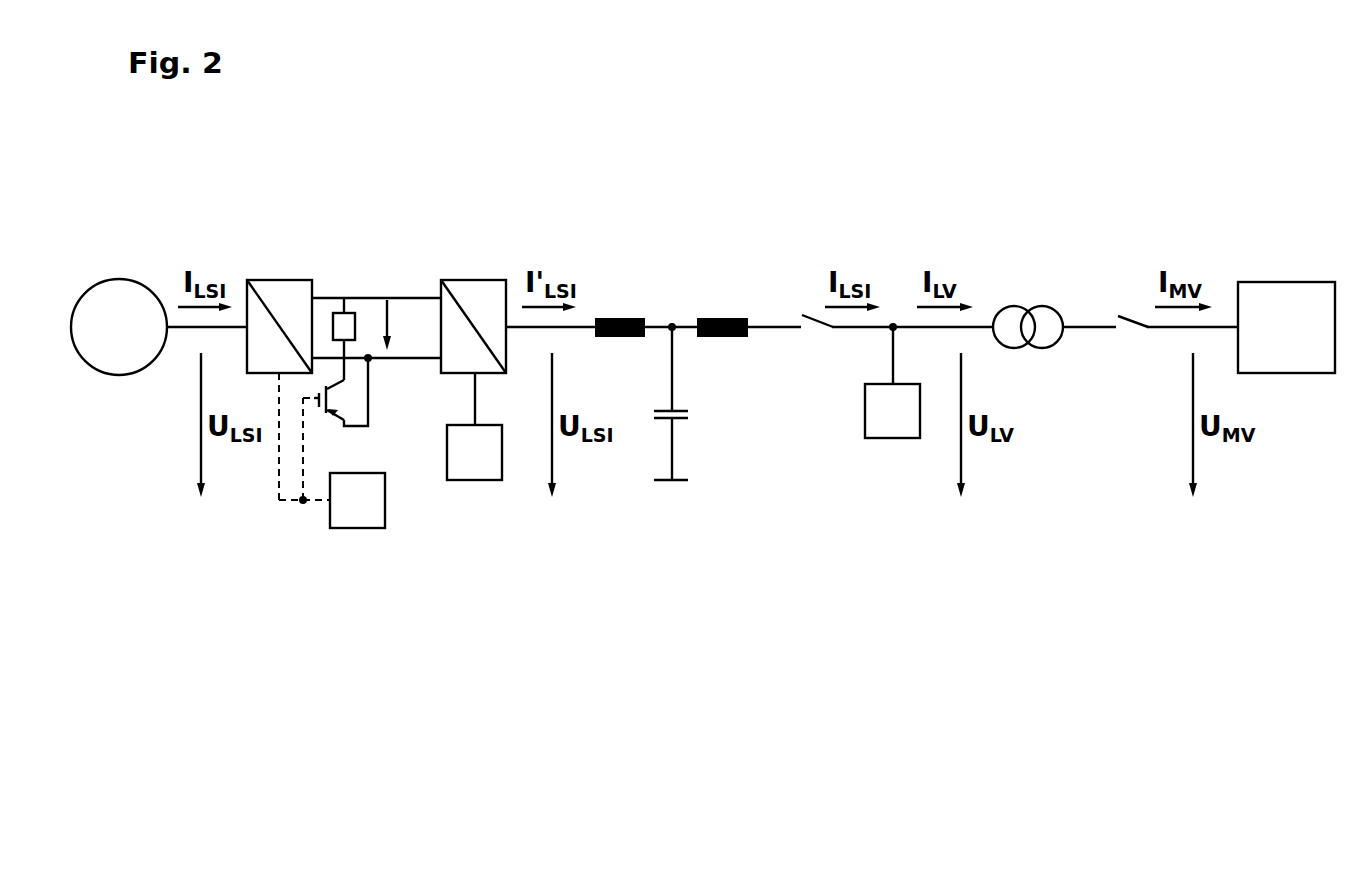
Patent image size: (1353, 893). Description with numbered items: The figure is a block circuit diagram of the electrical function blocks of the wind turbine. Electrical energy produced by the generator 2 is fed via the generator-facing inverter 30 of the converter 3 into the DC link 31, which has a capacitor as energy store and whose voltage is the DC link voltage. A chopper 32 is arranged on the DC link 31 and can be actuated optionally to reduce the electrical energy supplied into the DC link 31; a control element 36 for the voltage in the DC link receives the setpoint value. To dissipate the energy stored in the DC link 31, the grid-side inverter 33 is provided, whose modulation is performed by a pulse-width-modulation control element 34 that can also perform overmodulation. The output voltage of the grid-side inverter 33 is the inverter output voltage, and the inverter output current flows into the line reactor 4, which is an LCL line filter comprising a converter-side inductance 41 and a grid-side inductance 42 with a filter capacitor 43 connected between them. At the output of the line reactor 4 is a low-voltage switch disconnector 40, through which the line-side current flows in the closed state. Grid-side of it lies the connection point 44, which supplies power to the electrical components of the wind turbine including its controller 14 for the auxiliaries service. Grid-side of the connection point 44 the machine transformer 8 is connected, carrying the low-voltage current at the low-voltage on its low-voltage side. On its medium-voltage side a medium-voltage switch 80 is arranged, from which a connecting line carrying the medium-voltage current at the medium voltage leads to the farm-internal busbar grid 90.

The generator 2 is at (121, 291).
The converter 3 is at (508, 222).
The grid-side inverter 30 is at (270, 292).
The DC link 31 is at (371, 318).
The chopper 32 is at (369, 383).
The grid-side inverter 33 is at (481, 291).
The pulse-width-modulation control element 34 is at (472, 472).
The control element 36 is at (358, 517).
The line reactor 4 is at (593, 222).
The converter-side inductance 41 is at (627, 318).
The grid-side inductance 42 is at (719, 318).
The filter capacitor 43 is at (680, 419).
The low-voltage switch disconnector 40 is at (808, 313).
The connection point 44 is at (893, 320).
The controller 14 is at (885, 430).
The machine transformer 8 is at (1011, 306).
The medium-voltage switch 80 is at (1130, 315).
The farm-internal busbar grid 90 is at (1279, 296).